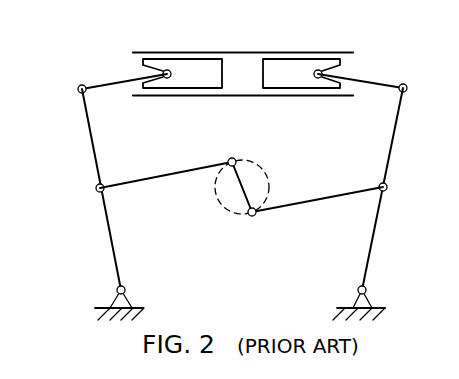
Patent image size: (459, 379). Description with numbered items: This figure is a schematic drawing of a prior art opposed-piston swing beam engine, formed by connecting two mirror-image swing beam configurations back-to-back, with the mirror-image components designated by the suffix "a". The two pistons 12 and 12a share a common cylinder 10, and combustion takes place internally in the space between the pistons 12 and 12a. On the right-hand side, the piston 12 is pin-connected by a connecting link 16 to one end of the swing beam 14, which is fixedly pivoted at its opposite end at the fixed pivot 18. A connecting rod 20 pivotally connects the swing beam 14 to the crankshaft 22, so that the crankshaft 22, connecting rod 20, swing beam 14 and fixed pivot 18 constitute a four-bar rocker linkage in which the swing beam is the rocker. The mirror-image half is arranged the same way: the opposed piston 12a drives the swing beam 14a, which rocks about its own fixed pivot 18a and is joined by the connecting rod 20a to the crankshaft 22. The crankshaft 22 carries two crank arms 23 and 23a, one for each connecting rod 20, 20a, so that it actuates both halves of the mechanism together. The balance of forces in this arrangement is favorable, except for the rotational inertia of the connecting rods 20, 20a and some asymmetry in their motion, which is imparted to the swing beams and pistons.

The cylinder 10 is at (243, 52).
The piston 12 is at (290, 63).
The piston 12a is at (188, 63).
The swing beam 14 is at (395, 145).
The swing beam 14a is at (90, 148).
The connecting link 16 is at (367, 78).
The fixed pivot 18 is at (367, 289).
The fixed pivot 18a is at (126, 289).
The connecting rod 20 is at (310, 204).
The connecting rod 20a is at (145, 182).
The crankshaft 22 is at (243, 188).
The crank arm 23 is at (247, 210).
The crank arm 23a is at (236, 160).